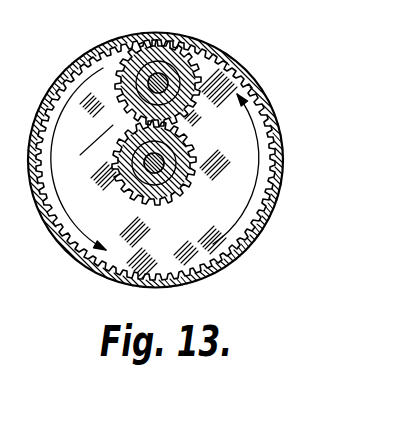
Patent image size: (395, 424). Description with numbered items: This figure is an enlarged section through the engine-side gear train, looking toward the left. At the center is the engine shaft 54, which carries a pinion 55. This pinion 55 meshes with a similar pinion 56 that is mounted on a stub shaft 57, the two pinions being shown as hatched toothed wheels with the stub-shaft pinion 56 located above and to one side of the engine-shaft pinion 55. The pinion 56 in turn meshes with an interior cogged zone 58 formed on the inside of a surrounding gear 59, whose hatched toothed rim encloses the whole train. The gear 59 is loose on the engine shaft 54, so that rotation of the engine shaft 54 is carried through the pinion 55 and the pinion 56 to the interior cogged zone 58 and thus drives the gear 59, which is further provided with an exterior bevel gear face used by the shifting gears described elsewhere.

The engine shaft 54 is at (124, 185).
The pinion 55 is at (178, 177).
The pinion 56 is at (197, 85).
The stub shaft 57 is at (127, 67).
The interior cogged zone 58 is at (194, 51).
The gear 59 is at (167, 36).